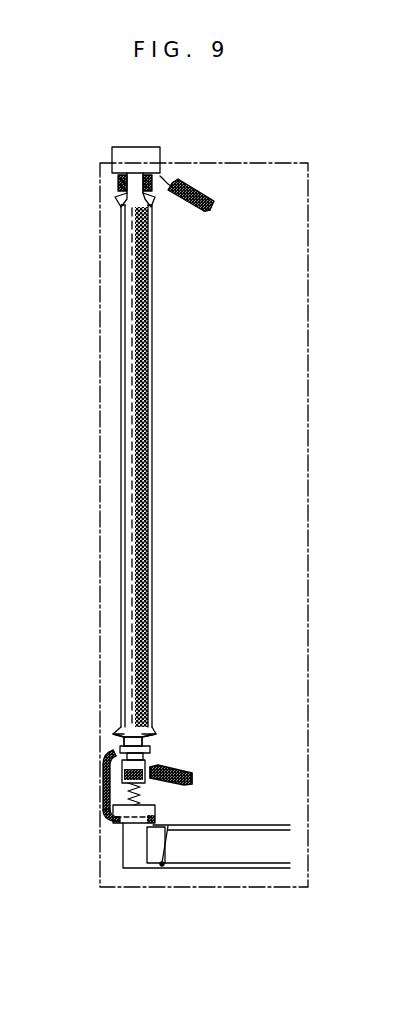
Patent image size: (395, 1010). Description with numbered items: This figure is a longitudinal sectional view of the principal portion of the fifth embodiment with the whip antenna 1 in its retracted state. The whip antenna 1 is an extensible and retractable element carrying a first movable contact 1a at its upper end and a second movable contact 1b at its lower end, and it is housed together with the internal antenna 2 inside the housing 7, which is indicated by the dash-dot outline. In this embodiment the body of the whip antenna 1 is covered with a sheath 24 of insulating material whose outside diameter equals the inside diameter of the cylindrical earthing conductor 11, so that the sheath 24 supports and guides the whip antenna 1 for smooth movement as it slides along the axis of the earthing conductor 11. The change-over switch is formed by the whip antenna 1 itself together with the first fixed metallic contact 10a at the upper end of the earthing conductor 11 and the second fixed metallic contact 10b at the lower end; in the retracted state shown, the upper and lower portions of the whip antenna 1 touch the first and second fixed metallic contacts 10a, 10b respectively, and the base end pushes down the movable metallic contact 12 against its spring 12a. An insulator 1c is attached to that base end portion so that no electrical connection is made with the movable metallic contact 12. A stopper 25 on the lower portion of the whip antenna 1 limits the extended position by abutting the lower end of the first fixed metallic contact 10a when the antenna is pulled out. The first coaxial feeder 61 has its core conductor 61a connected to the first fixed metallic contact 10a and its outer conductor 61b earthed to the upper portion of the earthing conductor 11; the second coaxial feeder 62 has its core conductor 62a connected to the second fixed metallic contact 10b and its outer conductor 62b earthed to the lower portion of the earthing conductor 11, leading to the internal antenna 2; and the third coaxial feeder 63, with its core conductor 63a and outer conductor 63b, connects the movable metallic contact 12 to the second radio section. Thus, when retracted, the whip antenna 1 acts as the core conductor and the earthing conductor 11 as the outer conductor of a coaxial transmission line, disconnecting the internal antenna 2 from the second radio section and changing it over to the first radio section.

The whip antenna 1 is at (147, 333).
The first movable contact 1a is at (133, 178).
The second movable contact 1b is at (130, 728).
The insulator 1c is at (148, 760).
The internal antenna 2 is at (272, 855).
The housing 7 is at (247, 163).
The first fixed metallic contact 10a is at (118, 186).
The second fixed metallic contact 10b is at (150, 750).
The earthing conductor 11 is at (123, 473).
The movable metallic contact 12 is at (147, 768).
The spring 12a is at (141, 789).
The sheath 24 is at (143, 390).
The stopper 25 is at (123, 746).
The first coaxial feeder 61 is at (205, 197).
The core conductor of first coaxial feeder 61a is at (163, 178).
The outer conductor of first coaxial feeder 61b is at (200, 208).
The second coaxial feeder 62 is at (105, 790).
The core conductor of second coaxial feeder 62a is at (112, 752).
The outer conductor of second coaxial feeder 62b is at (108, 815).
The third coaxial feeder 63 is at (188, 775).
The core conductor of third coaxial feeder 63a is at (152, 770).
The outer conductor of third coaxial feeder 63b is at (186, 785).